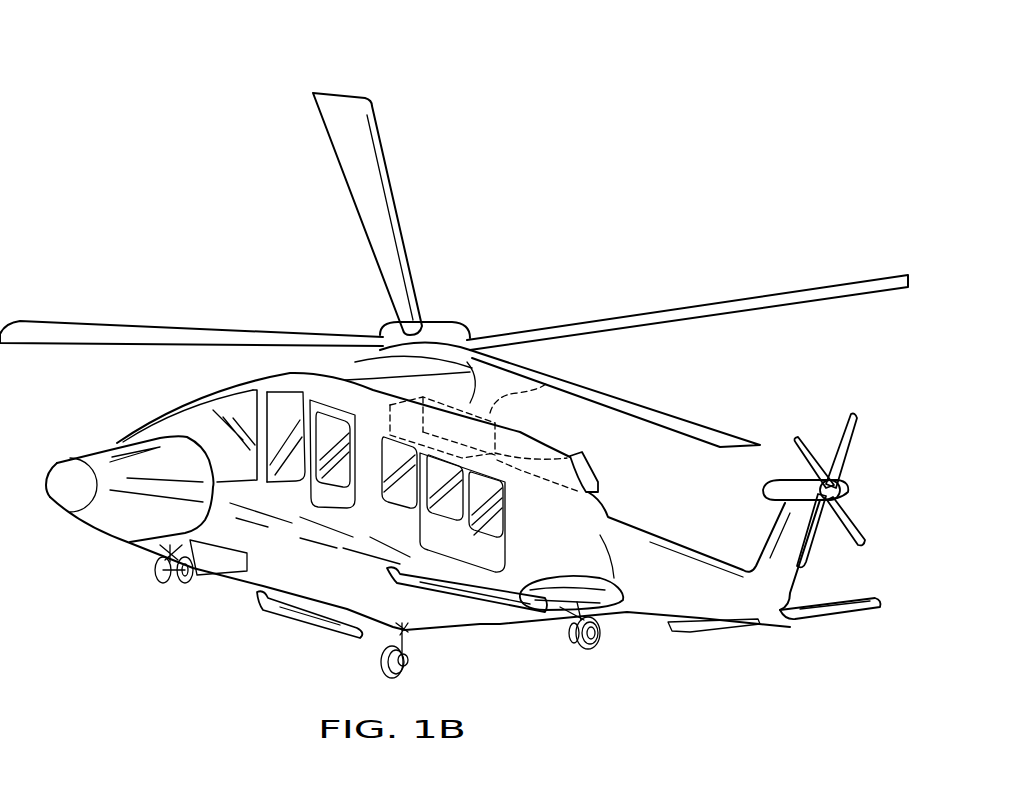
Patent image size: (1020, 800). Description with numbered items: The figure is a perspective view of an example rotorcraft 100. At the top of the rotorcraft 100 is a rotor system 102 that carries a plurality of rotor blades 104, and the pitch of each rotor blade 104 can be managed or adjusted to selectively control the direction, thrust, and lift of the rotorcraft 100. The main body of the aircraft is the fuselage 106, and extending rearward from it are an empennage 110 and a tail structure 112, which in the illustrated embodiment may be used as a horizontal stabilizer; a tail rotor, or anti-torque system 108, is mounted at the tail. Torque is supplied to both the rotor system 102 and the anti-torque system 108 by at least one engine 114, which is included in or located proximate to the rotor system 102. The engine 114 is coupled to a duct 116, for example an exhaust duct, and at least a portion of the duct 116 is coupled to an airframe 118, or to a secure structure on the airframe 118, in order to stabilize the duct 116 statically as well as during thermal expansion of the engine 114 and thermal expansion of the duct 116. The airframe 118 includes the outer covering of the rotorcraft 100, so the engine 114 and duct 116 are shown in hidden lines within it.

The rotorcraft 100 is at (176, 88).
The rotor system 102 is at (464, 299).
The rotor blade 104 is at (676, 325).
The fuselage 106 is at (257, 580).
The anti-torque system 108 is at (824, 410).
The empennage 110 is at (650, 605).
The tail structure 112 is at (838, 614).
The engine 114 is at (547, 383).
The duct 116 is at (598, 478).
The airframe 118 is at (543, 440).